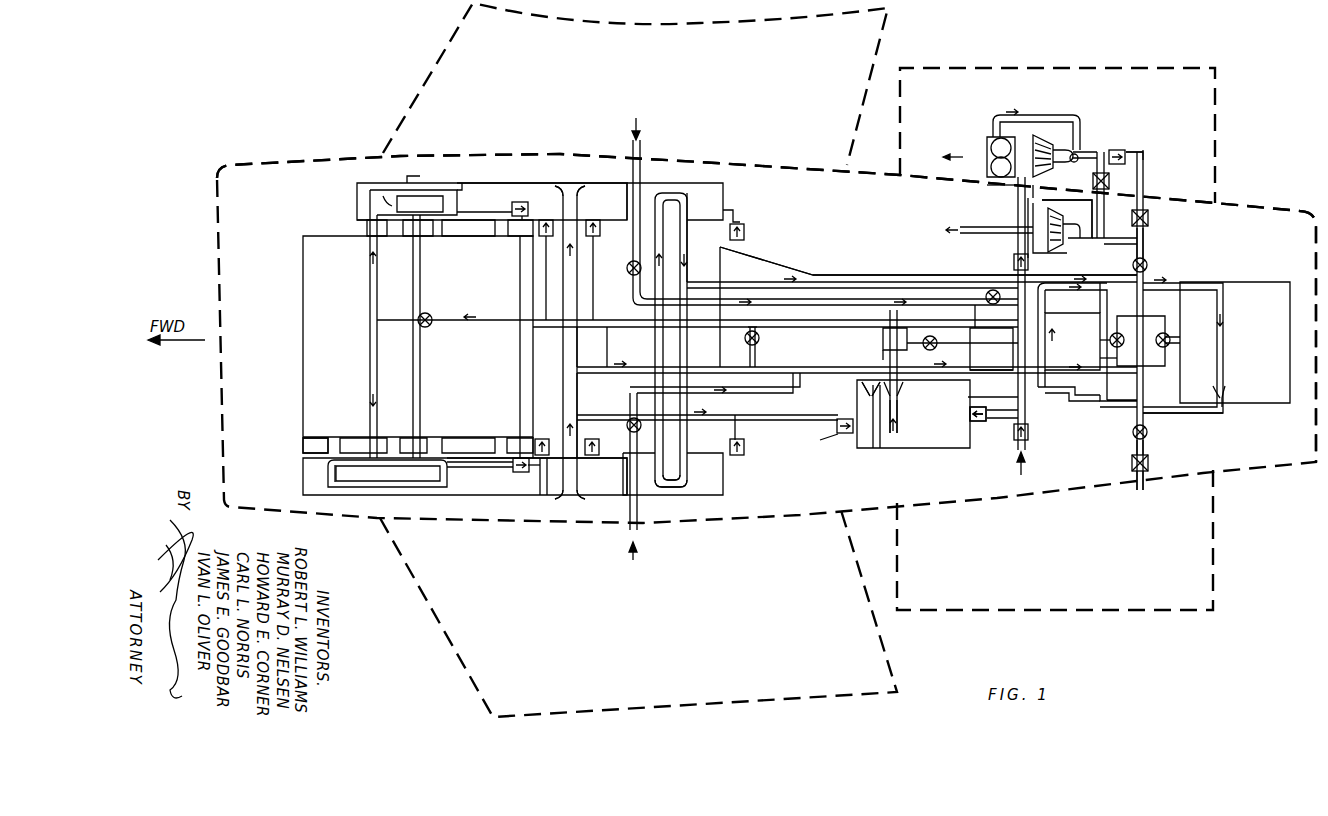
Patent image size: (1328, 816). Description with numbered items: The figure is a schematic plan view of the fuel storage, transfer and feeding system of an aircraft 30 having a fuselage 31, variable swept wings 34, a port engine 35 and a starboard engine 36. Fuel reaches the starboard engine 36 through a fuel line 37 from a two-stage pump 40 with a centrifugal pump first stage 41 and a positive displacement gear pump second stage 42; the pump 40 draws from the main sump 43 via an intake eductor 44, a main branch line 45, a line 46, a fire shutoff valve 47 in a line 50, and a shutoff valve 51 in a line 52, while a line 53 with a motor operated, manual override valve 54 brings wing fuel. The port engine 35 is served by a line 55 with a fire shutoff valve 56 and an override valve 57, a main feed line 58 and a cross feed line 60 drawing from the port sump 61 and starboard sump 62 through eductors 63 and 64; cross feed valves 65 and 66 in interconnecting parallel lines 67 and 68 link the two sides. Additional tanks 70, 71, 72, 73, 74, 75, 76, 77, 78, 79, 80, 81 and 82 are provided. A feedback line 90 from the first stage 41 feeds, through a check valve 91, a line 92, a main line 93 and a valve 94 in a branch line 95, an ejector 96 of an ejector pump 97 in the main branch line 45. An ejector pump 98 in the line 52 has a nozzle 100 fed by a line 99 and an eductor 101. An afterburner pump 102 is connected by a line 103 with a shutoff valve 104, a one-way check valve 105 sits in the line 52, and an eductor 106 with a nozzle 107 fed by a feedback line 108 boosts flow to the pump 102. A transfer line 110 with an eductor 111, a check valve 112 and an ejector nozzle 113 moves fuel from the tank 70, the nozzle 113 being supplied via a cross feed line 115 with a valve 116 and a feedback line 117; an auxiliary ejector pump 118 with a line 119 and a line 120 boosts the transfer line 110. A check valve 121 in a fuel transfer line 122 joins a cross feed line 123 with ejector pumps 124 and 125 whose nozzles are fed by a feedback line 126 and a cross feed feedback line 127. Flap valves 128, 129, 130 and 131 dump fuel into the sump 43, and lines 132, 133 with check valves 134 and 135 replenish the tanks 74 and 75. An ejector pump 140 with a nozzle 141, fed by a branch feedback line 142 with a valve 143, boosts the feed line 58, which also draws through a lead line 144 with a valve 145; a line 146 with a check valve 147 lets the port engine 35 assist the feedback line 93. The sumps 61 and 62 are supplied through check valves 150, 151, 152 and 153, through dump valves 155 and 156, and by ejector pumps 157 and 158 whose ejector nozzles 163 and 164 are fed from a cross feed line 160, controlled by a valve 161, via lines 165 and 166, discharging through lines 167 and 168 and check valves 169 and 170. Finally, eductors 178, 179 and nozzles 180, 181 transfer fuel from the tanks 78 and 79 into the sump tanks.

The aircraft 30 is at (320, 124).
The fuselage 31 is at (280, 160).
The variable swept wings 34 is at (546, 80).
The port engine 35 is at (1185, 552).
The starboard engine 36 is at (1185, 98).
The fuel line 37 is at (975, 157).
The two-stage pump 40 is at (1000, 180).
The centrifugal pump first stage 41 is at (1055, 142).
The positive displacement gear pump second stage 42 is at (988, 145).
The main sump 43 is at (945, 437).
The intake eductor 44 is at (898, 438).
The main branch line 45 is at (905, 425).
The line 46 is at (928, 290).
The fire shutoff valve 47 is at (1148, 266).
The line 50 is at (1145, 236).
The shutoff valve 51 is at (1150, 216).
The line 52 is at (1145, 162).
The line 53 is at (642, 154).
The motor operated, manual override valve 54 is at (627, 270).
The line 55 is at (1145, 438).
The fire shutoff valve 56 is at (1132, 433).
The motor operated, manual override valve 57 is at (1149, 462).
The main feed line 58 is at (808, 372).
The cross feed line 60 is at (563, 312).
The port sump 61 is at (606, 478).
The starboard sump 62 is at (609, 210).
The eductor 63 is at (572, 500).
The eductor 64 is at (570, 186).
The cross feed valve 65 is at (1170, 337).
The cross feed valve 66 is at (1108, 338).
The interconnecting parallel line 67 is at (1168, 344).
The interconnecting parallel line 68 is at (1100, 358).
The auxiliary tank 70 is at (1259, 343).
The auxiliary tank 71 is at (1066, 352).
The auxiliary tank 72 is at (882, 282).
The auxiliary tank 73 is at (754, 275).
The auxiliary tank 74 is at (714, 205).
The auxiliary tank 75 is at (711, 476).
The auxiliary tank 76 is at (504, 200).
The auxiliary tank 77 is at (487, 489).
The auxiliary tank 78 is at (355, 204).
The auxiliary tank 79 is at (305, 470).
The auxiliary tank 80 is at (337, 308).
The auxiliary tank 81 is at (484, 307).
The auxiliary tank 82 is at (559, 363).
The ejector pump nozzle feedback line 90 is at (1010, 250).
The check valve 91 is at (1013, 264).
The line 92 is at (1040, 290).
The main line 93 is at (978, 330).
The motor operated, manual override valve 94 is at (937, 348).
The branch line 95 is at (1012, 345).
The ejector 96 is at (883, 340).
The ejector pump 97 is at (885, 350).
The ejector pump 98 is at (1092, 152).
The line 99 is at (1030, 116).
The nozzle 100 is at (1062, 198).
The eductor 101 is at (1080, 153).
The single stage centrifugal afterburner pump 102 is at (1066, 242).
The line 103 is at (1112, 178).
The shutoff valve 104 is at (1112, 186).
The one-way check valve 105 is at (1127, 152).
The eductor 106 is at (1145, 246).
The ejector pump nozzle 107 is at (1082, 228).
The feedback line 108 is at (1033, 204).
The transfer line 110 is at (1205, 418).
The eductor 111 is at (1228, 394).
The one-way check valve 112 is at (982, 422).
The ejector nozzle 113 is at (1222, 388).
The cross feed line 115 is at (985, 293).
The motor operated, manual override valve 116 is at (975, 310).
The feedback line 117 is at (1224, 290).
The auxiliary ejector pump 118 is at (1067, 405).
The line 119 is at (1085, 396).
The line 120 is at (1062, 290).
The check valve 121 is at (838, 436).
The fuel transfer line 122 is at (838, 430).
The cross feed line 123 is at (652, 356).
The ejector pump 124 is at (663, 196).
The ejector pump 125 is at (656, 490).
The feedback line 126 is at (775, 270).
The cross feed feedback line 127 is at (687, 248).
The flap valve 128 is at (970, 396).
The flap valve 129 is at (893, 432).
The flap valve 130 is at (876, 436).
The flap valve 131 is at (858, 398).
The line 132 is at (738, 212).
The line 133 is at (738, 432).
The check valve 134 is at (745, 228).
The check valve 135 is at (742, 448).
The ejector pump 140 is at (756, 364).
The nozzle 141 is at (768, 392).
The branch feedback line 142 is at (745, 355).
The motor operated, manual override valve 143 is at (760, 338).
The lead line 144 is at (640, 535).
The motor operated, manual override valve 145 is at (630, 420).
The line 146 is at (1026, 458).
The one-way check valve 147 is at (1028, 436).
The one-way check valve 150 is at (555, 430).
The one-way check valve 151 is at (590, 439).
The one-way check valve 152 is at (560, 222).
The one-way check valve 153 is at (590, 238).
The dump valve 155 is at (540, 500).
The dump valve 156 is at (547, 178).
The ejector pump 157 is at (488, 482).
The ejector pump 158 is at (452, 200).
The cross feed line 160 is at (368, 282).
The motor operated, manual override valve 161 is at (445, 294).
The ejector nozzle 163 is at (447, 482).
The ejector nozzle 164 is at (466, 183).
The line 165 is at (400, 491).
The line 166 is at (407, 178).
The line 167 is at (437, 458).
The line 168 is at (436, 217).
The one-way check valve 169 is at (520, 474).
The one-way check valve 170 is at (543, 218).
The eductor 178 is at (378, 196).
The eductor 179 is at (322, 470).
The nozzle 180 is at (392, 193).
The nozzle 181 is at (330, 480).